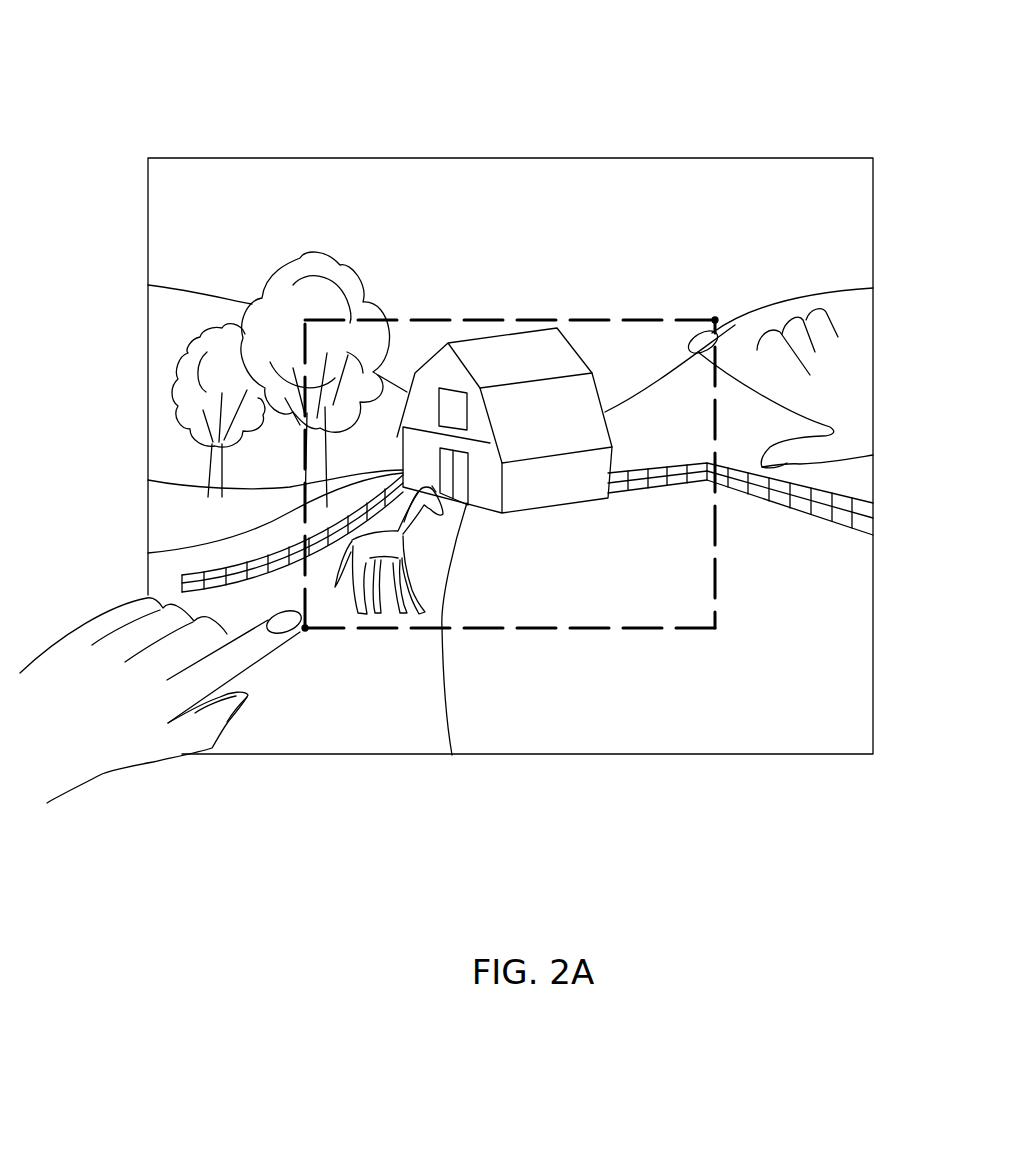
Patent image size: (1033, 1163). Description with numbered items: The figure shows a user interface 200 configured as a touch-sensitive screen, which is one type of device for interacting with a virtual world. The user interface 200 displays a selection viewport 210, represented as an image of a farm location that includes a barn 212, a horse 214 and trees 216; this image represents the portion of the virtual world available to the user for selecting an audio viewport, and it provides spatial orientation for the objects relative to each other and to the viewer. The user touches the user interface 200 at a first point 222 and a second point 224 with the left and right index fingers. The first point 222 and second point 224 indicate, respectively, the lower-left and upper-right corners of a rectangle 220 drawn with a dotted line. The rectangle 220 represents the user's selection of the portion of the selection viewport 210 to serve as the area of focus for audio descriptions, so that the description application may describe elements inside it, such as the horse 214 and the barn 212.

The user interface 200 is at (648, 86).
The selection viewport 210 is at (805, 240).
The barn 212 is at (440, 355).
The horse 214 is at (410, 547).
The trees 216 is at (280, 297).
The rectangle 220 is at (542, 632).
The first point 222 is at (305, 630).
The second point 224 is at (714, 320).